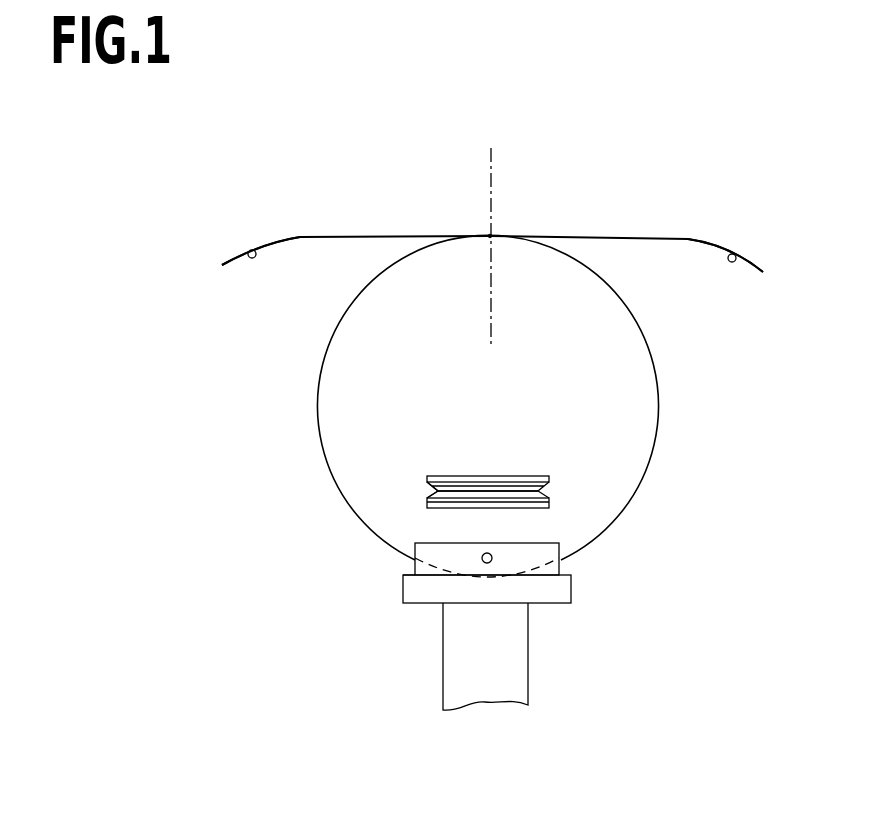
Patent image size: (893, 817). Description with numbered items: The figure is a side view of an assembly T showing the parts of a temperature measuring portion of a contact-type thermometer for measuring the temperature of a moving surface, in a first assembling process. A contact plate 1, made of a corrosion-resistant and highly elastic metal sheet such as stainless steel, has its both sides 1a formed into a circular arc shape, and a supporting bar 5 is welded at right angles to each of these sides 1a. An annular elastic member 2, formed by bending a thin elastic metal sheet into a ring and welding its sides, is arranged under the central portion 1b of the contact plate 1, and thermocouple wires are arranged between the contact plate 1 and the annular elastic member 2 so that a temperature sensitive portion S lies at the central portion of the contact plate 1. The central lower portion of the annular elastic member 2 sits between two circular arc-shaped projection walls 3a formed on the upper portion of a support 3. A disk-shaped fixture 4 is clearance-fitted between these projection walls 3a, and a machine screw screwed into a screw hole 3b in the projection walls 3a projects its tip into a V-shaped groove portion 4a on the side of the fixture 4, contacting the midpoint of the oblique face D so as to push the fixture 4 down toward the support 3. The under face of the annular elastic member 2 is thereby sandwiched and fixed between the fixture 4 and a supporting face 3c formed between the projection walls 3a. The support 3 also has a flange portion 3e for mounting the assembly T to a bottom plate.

The contact plate 1 is at (381, 236).
The both sides of contact plate 1a is at (264, 241).
The central portion of contact plate 1b is at (490, 236).
The annular elastic member 2 is at (658, 377).
The support 3 is at (500, 635).
The projection walls 3a is at (425, 552).
The screw hole 3b is at (487, 553).
The supporting face 3c is at (410, 572).
The flange portion 3e is at (565, 593).
The fixture 4 is at (490, 477).
The groove portion 4a is at (428, 495).
The supporting bar 5 is at (252, 258).
The oblique face D is at (456, 497).
The temperature sensitive portion S is at (494, 241).
The assembly T is at (664, 445).